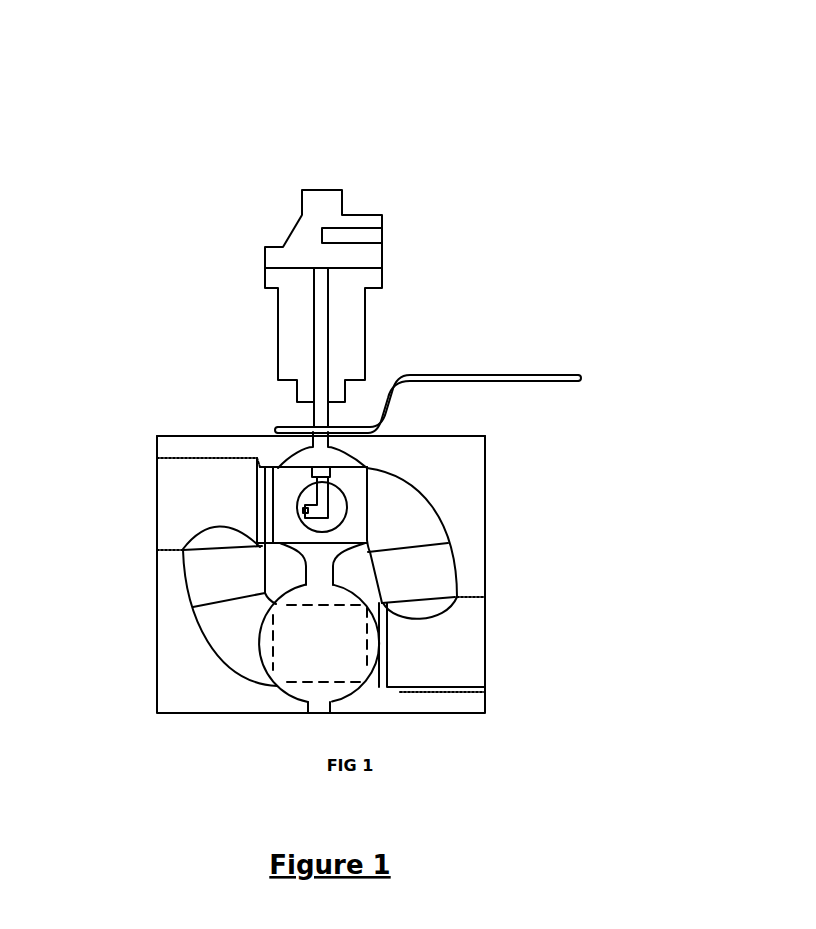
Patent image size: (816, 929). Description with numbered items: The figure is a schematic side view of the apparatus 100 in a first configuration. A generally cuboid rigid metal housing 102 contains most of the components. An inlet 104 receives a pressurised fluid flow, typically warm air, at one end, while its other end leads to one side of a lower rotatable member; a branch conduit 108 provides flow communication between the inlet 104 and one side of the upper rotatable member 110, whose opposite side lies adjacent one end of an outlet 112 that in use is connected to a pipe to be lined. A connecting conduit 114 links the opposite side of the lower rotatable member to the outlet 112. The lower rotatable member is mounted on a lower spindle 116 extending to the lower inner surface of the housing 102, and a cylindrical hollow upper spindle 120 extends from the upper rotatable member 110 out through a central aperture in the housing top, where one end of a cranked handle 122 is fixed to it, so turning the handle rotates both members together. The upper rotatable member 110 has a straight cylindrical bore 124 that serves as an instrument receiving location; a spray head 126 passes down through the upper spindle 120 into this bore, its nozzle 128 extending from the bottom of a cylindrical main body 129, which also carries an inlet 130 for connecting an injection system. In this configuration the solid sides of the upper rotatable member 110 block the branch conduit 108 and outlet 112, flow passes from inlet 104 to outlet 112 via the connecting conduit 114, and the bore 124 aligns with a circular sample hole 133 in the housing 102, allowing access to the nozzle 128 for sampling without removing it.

The apparatus 100 is at (318, 437).
The housing 102 is at (479, 540).
The inlet 104 is at (476, 647).
The branch conduit 108 is at (420, 508).
The upper rotatable member 110 is at (337, 458).
The outlet 112 is at (165, 485).
The connecting conduit 114 is at (222, 618).
The lower spindle 116 is at (322, 703).
The upper spindle 120 is at (190, 437).
The cranked handle 122 is at (566, 373).
The bore 124 is at (325, 523).
The spray head 126 is at (310, 426).
The nozzle 128 is at (308, 517).
The main body 129 is at (361, 320).
The inlet 130 is at (381, 232).
The sample hole 133 is at (337, 532).